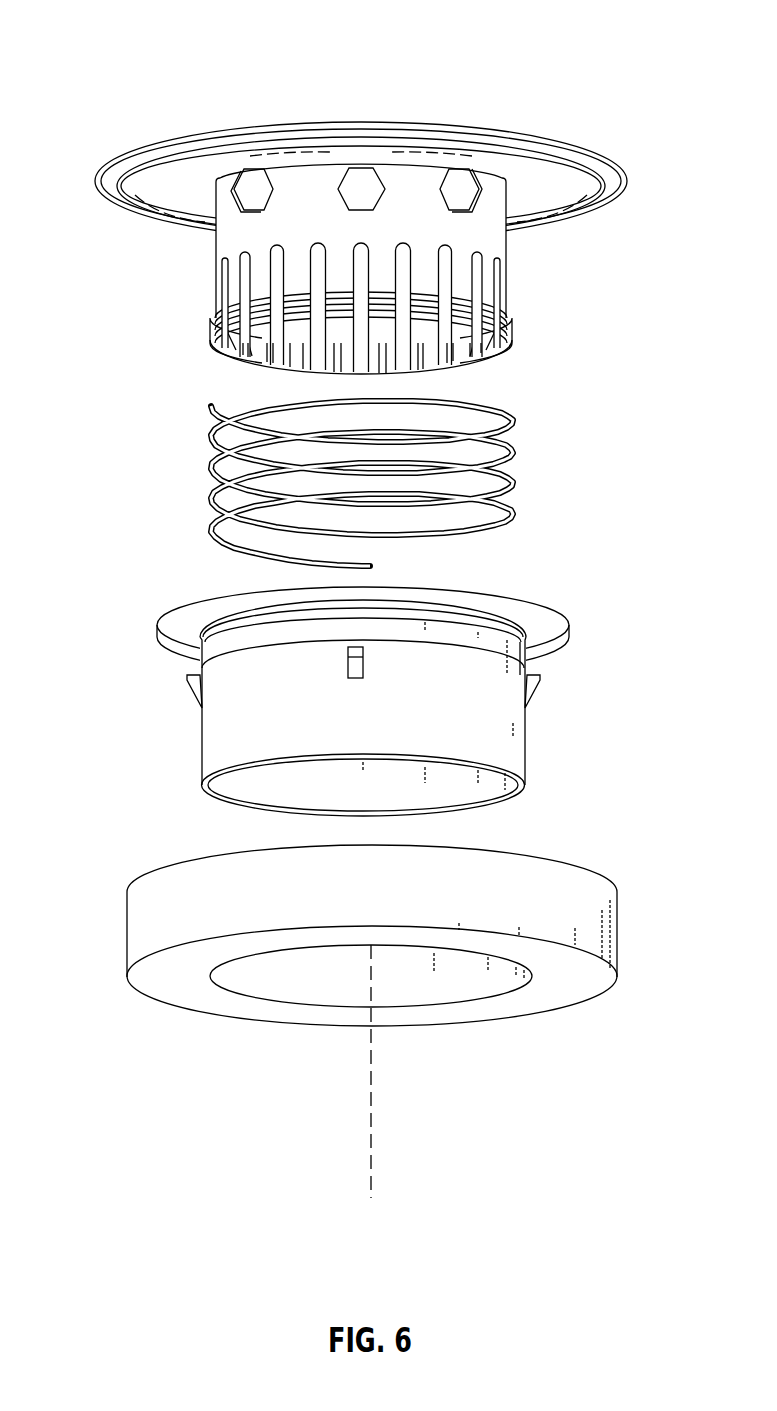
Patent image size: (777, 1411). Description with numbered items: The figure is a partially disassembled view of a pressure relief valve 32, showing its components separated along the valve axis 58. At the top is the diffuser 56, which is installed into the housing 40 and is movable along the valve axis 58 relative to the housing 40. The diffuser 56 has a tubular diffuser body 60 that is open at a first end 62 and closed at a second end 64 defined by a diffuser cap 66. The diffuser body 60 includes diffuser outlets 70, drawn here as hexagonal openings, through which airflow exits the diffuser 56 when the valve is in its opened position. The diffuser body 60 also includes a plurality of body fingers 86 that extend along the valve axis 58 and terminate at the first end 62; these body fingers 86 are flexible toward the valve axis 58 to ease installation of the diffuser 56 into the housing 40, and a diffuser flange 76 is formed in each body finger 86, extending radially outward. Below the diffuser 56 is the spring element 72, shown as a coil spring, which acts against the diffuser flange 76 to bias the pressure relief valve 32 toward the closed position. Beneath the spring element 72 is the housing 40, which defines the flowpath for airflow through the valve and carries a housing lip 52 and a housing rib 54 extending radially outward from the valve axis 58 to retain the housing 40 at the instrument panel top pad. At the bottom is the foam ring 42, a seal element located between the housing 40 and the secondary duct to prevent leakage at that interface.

The pressure relief valve 32 is at (624, 30).
The diffuser 56 is at (339, 149).
The diffuser cap 66 is at (372, 123).
The second end 64 is at (425, 172).
The diffuser outlets 70 is at (358, 172).
The diffuser body 60 is at (367, 223).
The diffuser flange 76 is at (357, 349).
The body fingers 86 is at (333, 303).
The first end 62 is at (223, 350).
The spring element 72 is at (212, 487).
The housing lip 52 is at (157, 630).
The housing rib 54 is at (190, 687).
The housing 40 is at (355, 708).
The foam ring 42 is at (142, 945).
The valve axis 58 is at (371, 1158).